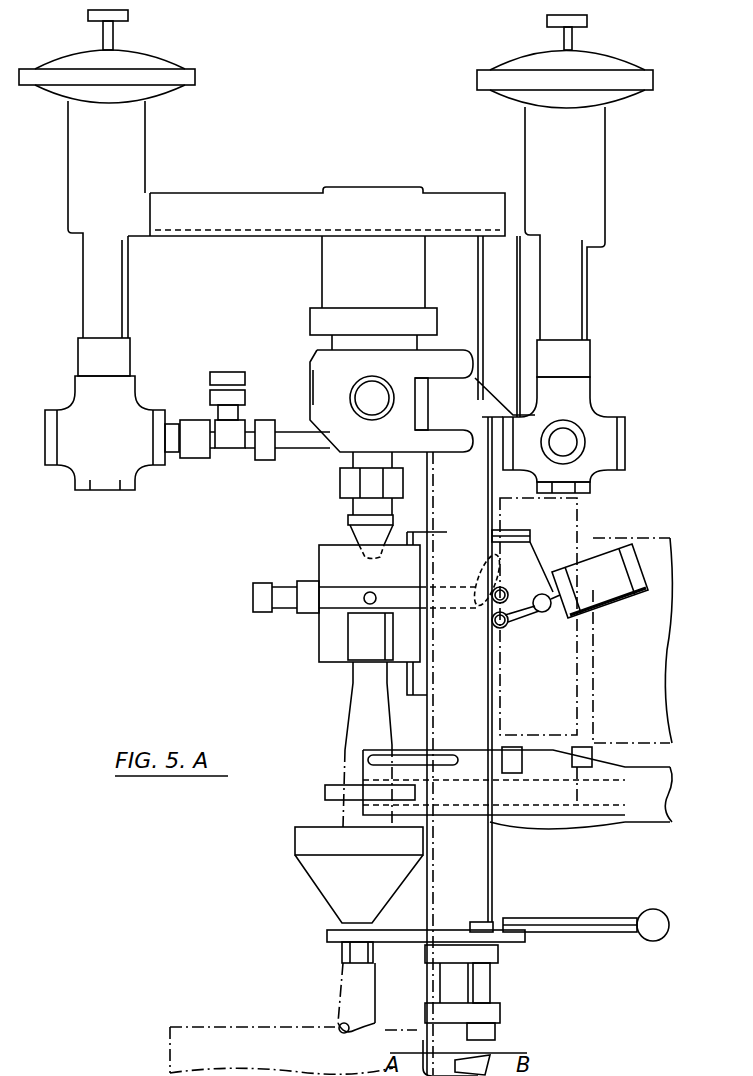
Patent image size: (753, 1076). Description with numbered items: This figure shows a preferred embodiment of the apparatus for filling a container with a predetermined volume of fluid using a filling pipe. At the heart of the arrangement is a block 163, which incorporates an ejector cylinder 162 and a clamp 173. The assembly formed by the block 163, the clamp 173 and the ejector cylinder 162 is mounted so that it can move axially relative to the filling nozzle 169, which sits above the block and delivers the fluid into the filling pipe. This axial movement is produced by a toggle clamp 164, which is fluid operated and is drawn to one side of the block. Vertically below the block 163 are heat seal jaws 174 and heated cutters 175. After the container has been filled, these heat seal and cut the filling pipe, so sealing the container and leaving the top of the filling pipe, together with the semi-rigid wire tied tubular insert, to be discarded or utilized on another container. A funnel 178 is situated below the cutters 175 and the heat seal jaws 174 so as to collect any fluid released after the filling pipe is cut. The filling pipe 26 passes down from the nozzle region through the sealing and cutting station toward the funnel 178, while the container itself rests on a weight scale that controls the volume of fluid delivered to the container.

The nozzle tube 26 is at (345, 740).
The ejector cylinder 162 is at (253, 597).
The block 163 is at (319, 557).
The toggle clamp 164 is at (605, 600).
The filling nozzle 169 is at (341, 530).
The clamp 173 is at (348, 648).
The heat seal jaws 174 is at (328, 790).
The heated cutters 175 is at (363, 760).
The funnel 178 is at (312, 885).